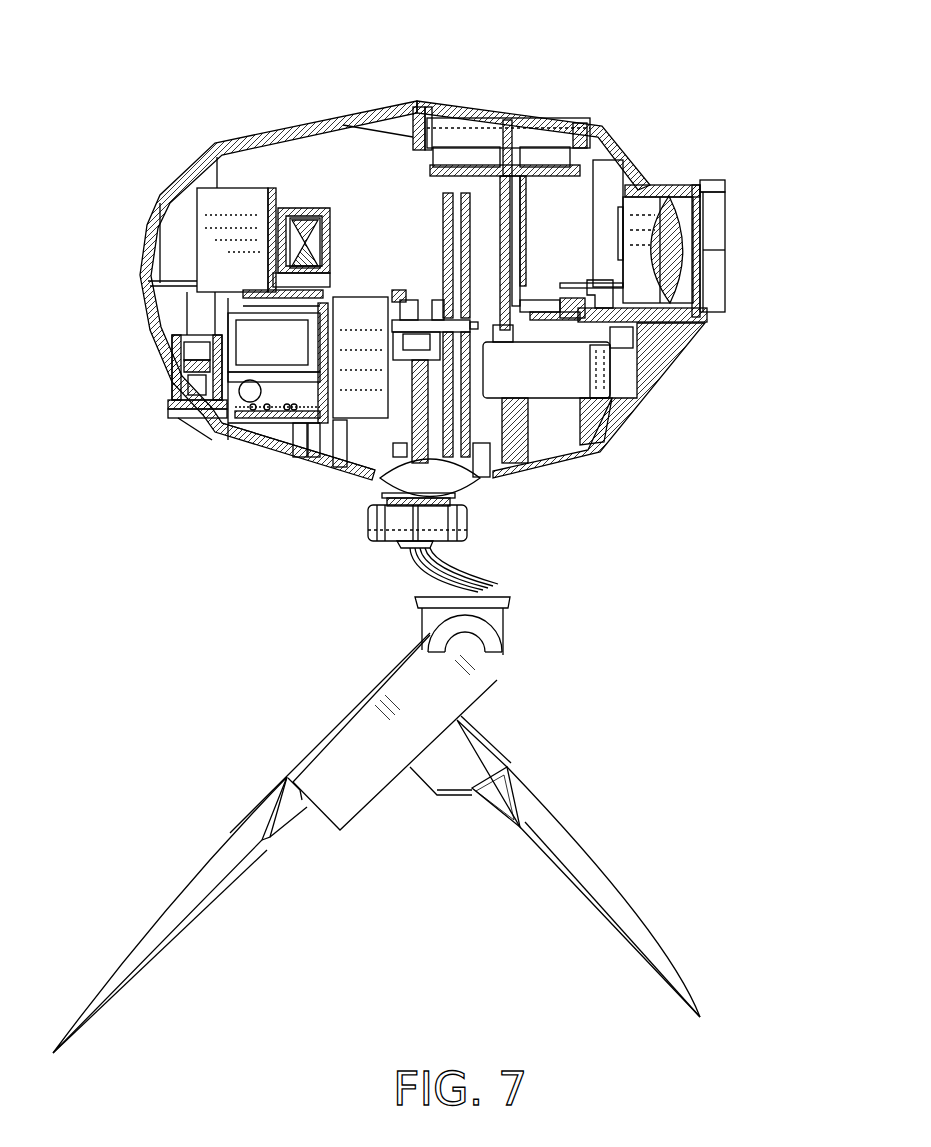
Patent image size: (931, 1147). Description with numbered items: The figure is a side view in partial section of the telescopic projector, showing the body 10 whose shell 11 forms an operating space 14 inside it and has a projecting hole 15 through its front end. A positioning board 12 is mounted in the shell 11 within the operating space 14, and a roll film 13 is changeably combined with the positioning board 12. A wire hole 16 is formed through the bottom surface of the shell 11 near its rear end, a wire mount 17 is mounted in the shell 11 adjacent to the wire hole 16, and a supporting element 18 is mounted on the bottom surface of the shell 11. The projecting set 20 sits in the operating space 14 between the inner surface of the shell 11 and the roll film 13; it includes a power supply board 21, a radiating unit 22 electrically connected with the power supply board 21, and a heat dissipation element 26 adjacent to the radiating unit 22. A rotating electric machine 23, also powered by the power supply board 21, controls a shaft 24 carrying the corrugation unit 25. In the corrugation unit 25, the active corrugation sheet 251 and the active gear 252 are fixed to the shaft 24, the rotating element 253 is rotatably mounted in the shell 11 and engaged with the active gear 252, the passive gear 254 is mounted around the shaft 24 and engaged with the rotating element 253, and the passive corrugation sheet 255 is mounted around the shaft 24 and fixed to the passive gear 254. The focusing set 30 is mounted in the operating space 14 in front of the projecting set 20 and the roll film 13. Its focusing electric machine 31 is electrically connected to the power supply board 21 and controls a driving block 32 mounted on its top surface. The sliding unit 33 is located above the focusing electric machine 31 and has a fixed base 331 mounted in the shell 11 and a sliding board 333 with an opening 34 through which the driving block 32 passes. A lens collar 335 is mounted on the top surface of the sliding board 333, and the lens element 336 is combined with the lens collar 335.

The body 10 is at (398, 88).
The shell 11 is at (272, 468).
The positioning board 12 is at (510, 157).
The roll film 13 is at (512, 210).
The operating space 14 is at (348, 191).
The projecting hole 15 is at (712, 186).
The wire hole 16 is at (175, 412).
The wire mount 17 is at (175, 352).
The supporting element 18 is at (452, 667).
The projecting set 20 is at (248, 175).
The power supply board 21 is at (260, 410).
The radiating unit 22 is at (297, 208).
The rotating electric machine 23 is at (363, 408).
The shaft 24 is at (465, 335).
The corrugation unit 25 is at (440, 228).
The heat dissipation element 26 is at (215, 200).
The focusing set 30 is at (590, 405).
The focusing electric machine 31 is at (597, 375).
The driving block 32 is at (638, 320).
The sliding unit 33 is at (630, 188).
The opening 34 is at (588, 305).
The active corrugation sheet 251 is at (477, 195).
The active gear 252 is at (400, 292).
The rotating element 253 is at (378, 490).
The passive gear 254 is at (437, 262).
The passive corrugation sheet 255 is at (450, 193).
The fixed base 331 is at (513, 330).
The sliding board 333 is at (537, 300).
The lens collar 335 is at (648, 186).
The lens element 336 is at (670, 245).